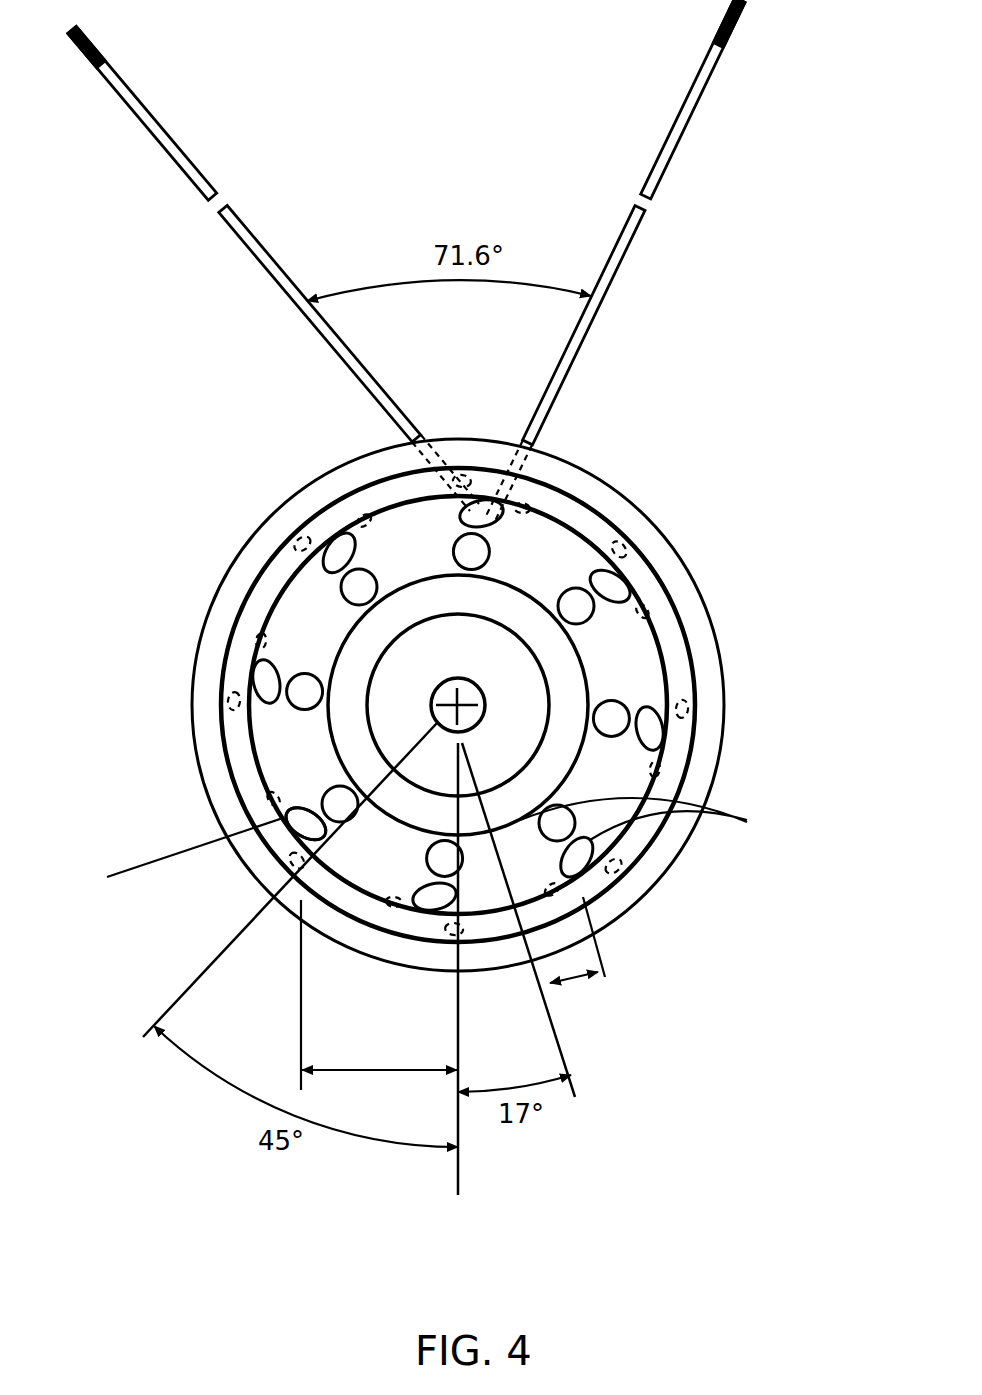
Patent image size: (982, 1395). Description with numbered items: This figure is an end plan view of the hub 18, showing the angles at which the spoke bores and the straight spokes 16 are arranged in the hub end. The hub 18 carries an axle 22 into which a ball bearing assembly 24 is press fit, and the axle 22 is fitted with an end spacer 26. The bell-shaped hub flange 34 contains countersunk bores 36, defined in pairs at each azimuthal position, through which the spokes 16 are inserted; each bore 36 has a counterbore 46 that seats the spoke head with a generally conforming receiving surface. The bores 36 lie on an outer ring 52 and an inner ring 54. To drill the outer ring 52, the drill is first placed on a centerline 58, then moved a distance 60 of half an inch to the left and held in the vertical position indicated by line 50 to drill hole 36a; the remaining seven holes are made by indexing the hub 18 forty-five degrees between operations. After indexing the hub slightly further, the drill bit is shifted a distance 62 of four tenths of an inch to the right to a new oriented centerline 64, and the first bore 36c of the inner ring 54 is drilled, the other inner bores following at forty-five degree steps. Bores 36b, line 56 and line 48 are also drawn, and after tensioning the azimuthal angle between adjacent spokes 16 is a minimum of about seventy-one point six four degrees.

The straight spokes 16 is at (160, 120).
The hub 18 is at (722, 476).
The axle 22 is at (468, 693).
The ball bearing assembly 24 is at (562, 687).
The end spacer 26 is at (510, 663).
The hub flange 34 is at (677, 857).
The bores 36 is at (683, 763).
The hole 36a is at (290, 865).
The second aperture 36b is at (293, 833).
The first bore of the inner ring 36c is at (613, 897).
The counterbore 46 is at (649, 830).
The reference line 48 is at (173, 1003).
The line 50 is at (300, 1007).
The outer ring 52 is at (283, 628).
The inner ring 54 is at (318, 617).
The reference line 56 is at (157, 860).
The centerline 58 is at (462, 1172).
The distance 60 is at (379, 1088).
The distance 62 is at (575, 998).
The oriented centerline 64 is at (603, 947).